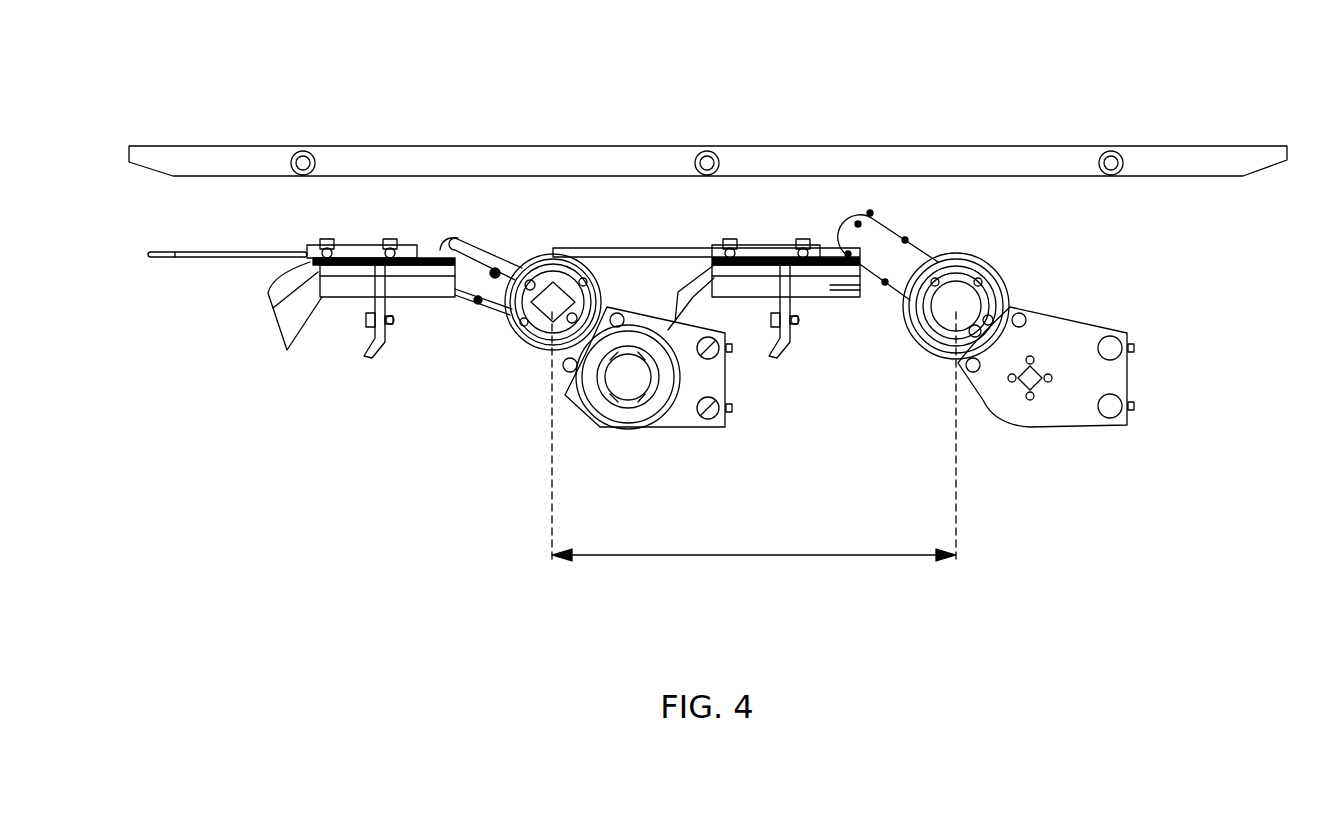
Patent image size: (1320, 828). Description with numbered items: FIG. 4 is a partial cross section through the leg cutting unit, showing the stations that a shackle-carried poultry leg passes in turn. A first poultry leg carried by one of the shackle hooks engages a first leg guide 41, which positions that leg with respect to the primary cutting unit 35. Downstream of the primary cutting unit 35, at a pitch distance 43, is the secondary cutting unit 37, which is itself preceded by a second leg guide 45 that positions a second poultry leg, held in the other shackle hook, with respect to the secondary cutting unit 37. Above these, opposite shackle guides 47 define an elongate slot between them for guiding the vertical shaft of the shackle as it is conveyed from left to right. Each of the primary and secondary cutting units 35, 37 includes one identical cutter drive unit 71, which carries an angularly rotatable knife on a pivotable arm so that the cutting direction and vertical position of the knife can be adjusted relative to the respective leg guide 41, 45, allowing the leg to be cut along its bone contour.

The primary cutting unit 35 is at (654, 323).
The secondary cutting unit 37 is at (1043, 343).
The first leg guide 41 is at (344, 288).
The pitch distance 43 is at (755, 555).
The second leg guide 45 is at (756, 288).
The shackle guides 47 is at (1174, 163).
The cutter drive unit 71 is at (530, 350).